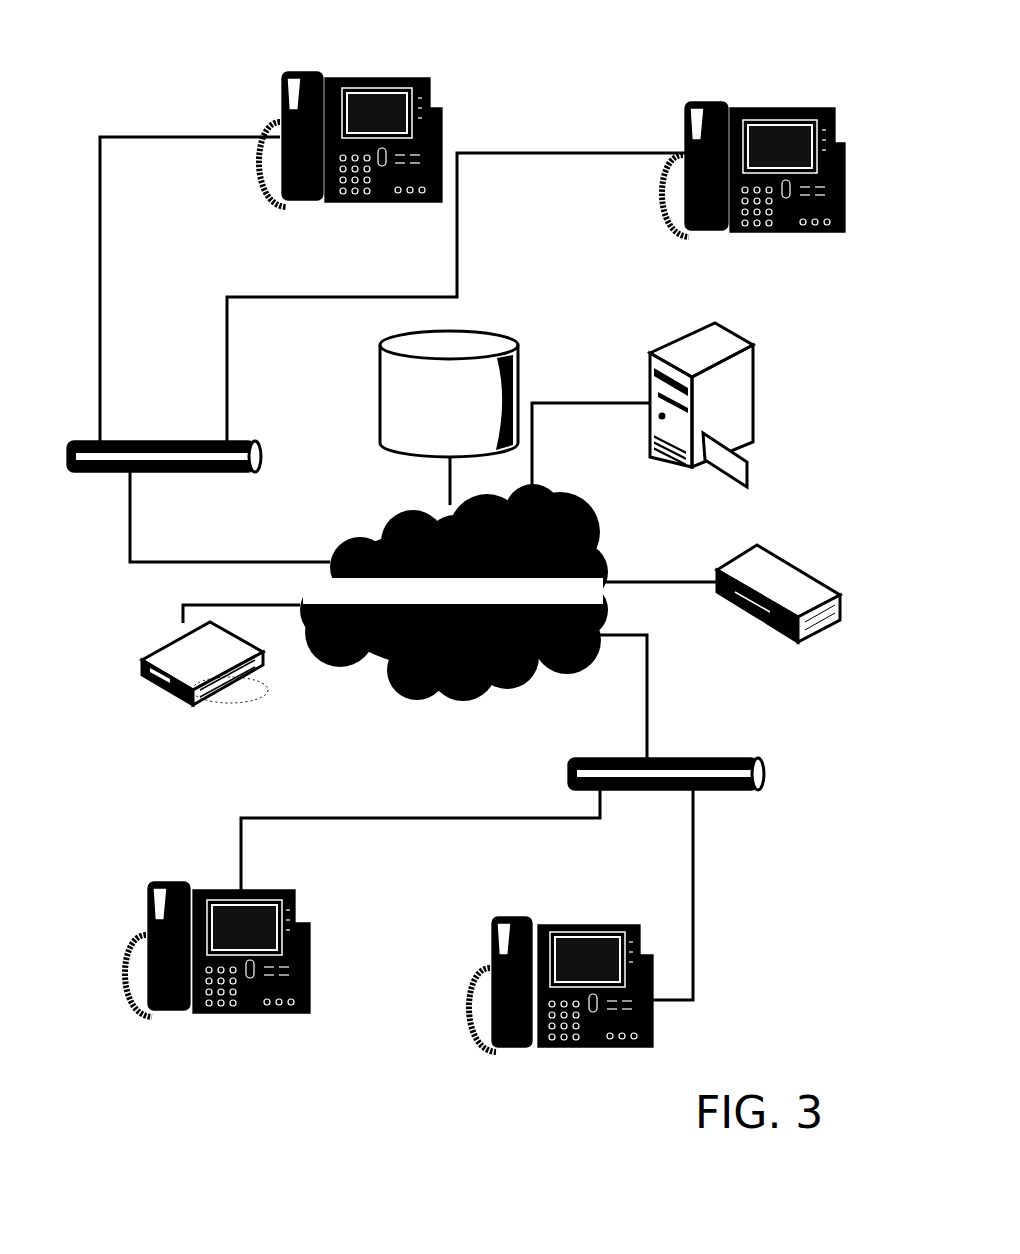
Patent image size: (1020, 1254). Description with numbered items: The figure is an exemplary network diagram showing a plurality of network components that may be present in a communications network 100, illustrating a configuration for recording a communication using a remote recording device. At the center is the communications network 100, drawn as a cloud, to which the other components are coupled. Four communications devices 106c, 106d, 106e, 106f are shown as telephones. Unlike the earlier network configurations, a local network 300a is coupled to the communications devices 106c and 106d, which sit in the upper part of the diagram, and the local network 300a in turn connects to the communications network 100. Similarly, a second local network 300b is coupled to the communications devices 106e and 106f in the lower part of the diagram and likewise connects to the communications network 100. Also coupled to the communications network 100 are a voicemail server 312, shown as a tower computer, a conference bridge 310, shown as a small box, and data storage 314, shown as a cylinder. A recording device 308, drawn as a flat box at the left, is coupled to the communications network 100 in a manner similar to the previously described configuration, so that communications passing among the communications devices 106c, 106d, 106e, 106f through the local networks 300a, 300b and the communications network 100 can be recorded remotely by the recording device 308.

The communications network 100 is at (386, 487).
The communications device 106c is at (442, 130).
The communications device 106d is at (785, 233).
The communications device 106e is at (152, 890).
The communications device 106f is at (586, 924).
The local network 300a is at (252, 440).
The local network 300b is at (757, 793).
The recording device 308 is at (165, 650).
The conference bridge 310 is at (717, 568).
The voicemail server 312 is at (650, 355).
The data storage 314 is at (449, 394).